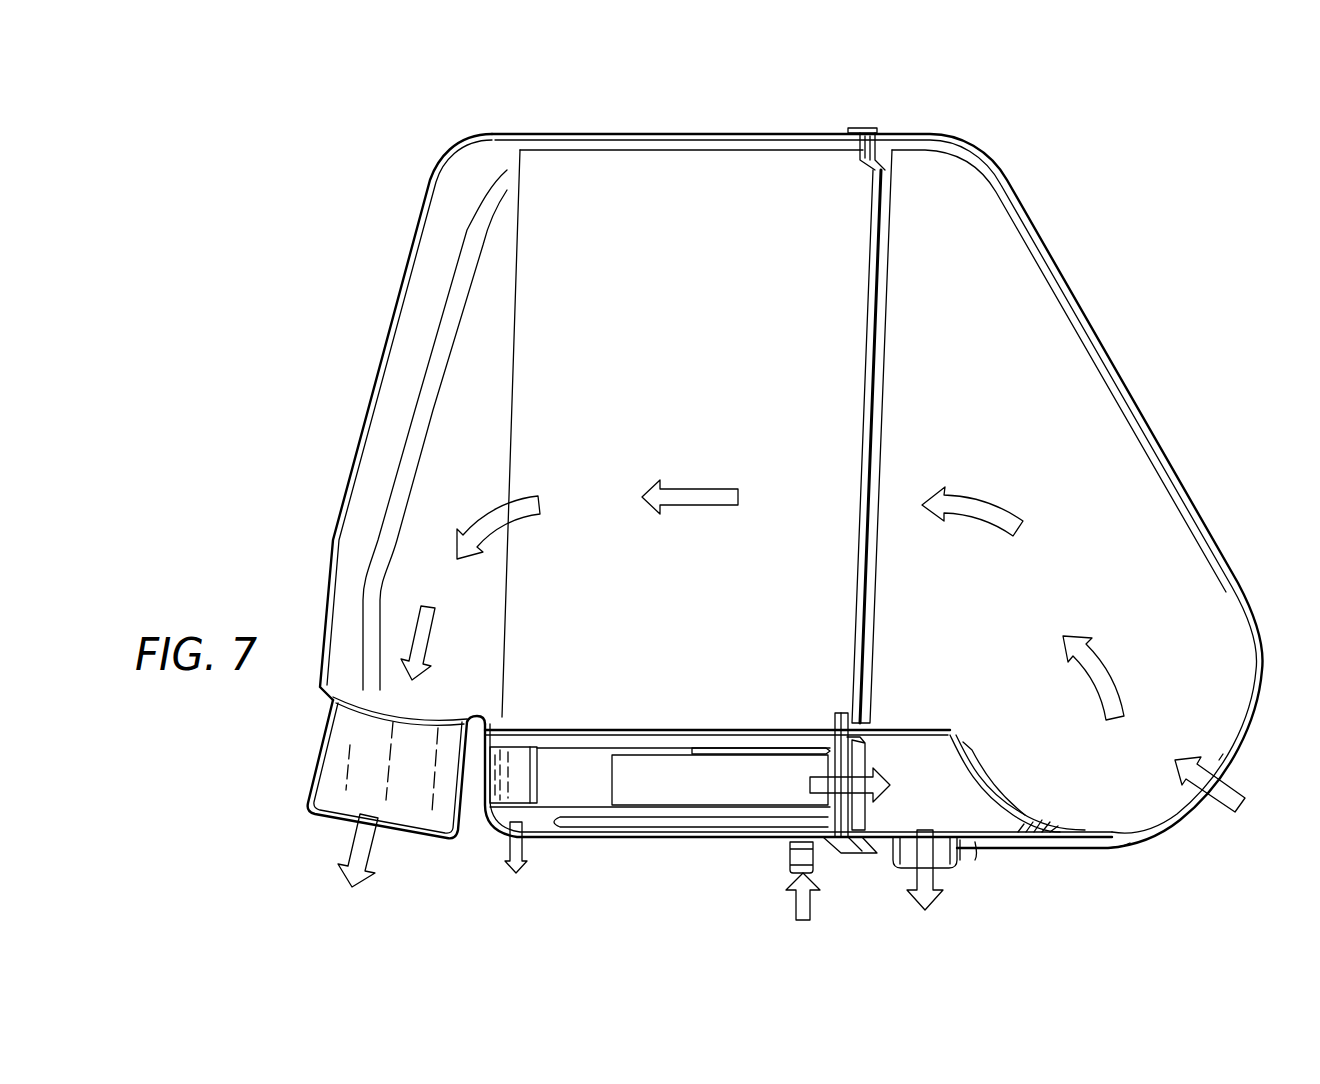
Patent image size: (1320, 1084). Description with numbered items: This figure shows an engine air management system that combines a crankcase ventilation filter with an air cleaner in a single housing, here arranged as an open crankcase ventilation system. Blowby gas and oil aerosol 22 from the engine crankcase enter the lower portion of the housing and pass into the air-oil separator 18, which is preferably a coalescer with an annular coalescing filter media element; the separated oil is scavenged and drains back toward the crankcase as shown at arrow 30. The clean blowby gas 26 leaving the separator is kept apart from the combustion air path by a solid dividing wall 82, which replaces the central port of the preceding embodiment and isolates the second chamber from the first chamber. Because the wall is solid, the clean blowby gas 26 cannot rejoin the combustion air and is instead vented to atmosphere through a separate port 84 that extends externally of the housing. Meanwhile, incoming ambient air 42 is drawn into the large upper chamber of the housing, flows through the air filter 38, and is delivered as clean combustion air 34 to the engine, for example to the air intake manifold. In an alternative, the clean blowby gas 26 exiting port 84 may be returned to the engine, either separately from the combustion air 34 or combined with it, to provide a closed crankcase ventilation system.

The air filter 38 is at (742, 134).
The dividing wall 82 is at (915, 728).
The clean blowby gas 26 is at (887, 797).
The fifth port 84 is at (968, 848).
The incoming ambient air 42 is at (1220, 808).
The blowby gas and oil aerosol 22 is at (783, 907).
The air-oil separator 18 is at (664, 787).
The scavenged separated oil 30 is at (522, 868).
The combustion air 34 is at (345, 840).